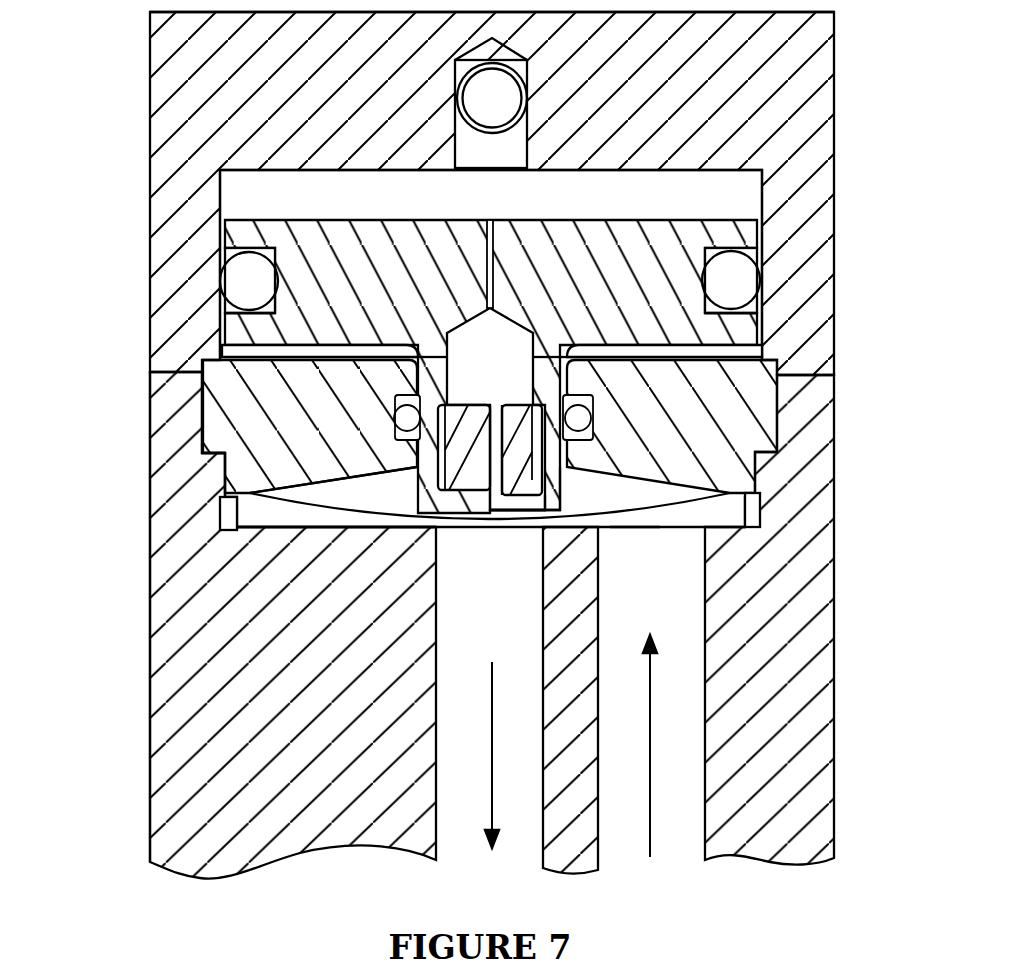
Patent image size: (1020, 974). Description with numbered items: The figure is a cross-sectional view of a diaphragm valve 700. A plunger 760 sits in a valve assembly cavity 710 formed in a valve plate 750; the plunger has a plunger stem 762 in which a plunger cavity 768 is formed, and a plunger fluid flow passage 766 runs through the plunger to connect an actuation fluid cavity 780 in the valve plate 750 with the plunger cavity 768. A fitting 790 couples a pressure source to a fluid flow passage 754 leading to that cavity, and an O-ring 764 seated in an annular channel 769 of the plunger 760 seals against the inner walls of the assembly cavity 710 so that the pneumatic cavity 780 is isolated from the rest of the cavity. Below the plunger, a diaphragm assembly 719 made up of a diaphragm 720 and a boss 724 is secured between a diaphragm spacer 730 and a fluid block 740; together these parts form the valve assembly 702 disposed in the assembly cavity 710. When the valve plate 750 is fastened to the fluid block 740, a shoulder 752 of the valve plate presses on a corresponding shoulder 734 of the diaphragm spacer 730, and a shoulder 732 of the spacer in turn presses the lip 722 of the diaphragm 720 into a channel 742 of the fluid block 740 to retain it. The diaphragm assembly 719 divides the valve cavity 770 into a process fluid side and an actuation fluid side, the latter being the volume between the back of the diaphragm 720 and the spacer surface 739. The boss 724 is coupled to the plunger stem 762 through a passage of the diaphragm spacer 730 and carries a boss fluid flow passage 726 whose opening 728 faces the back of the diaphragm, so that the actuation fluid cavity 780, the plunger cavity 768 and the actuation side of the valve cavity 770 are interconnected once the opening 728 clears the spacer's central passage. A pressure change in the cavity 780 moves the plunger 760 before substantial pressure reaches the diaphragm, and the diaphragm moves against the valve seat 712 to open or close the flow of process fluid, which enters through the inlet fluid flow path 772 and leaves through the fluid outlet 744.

The valve 700 is at (320, 600).
The valve assembly 702 is at (265, 305).
The valve assembly cavity 710 is at (205, 455).
The valve seat 712 is at (320, 565).
The diaphragm assembly 719 is at (626, 523).
The diaphragm 720 is at (437, 485).
The lip 722 is at (232, 515).
The boss 724 is at (462, 482).
The boss fluid flow passage 726 is at (495, 405).
The opening 728 is at (560, 505).
The diaphragm spacer 730 is at (735, 405).
The shoulder 732 is at (240, 490).
The shoulder 734 is at (262, 358).
The surface 739 is at (402, 467).
The fluid block 740 is at (755, 738).
The channel 742 is at (240, 537).
The fluid outlet 744 is at (472, 755).
The valve plate 750 is at (795, 262).
The shoulder 752 is at (215, 352).
The fluid flow passage 754 is at (488, 92).
The plunger 760 is at (665, 335).
The plunger stem 762 is at (570, 450).
The O-ring 764 is at (245, 268).
The plunger fluid flow passage 766 is at (493, 262).
The plunger cavity 768 is at (580, 440).
The annular channel 769 is at (235, 333).
The valve cavity 770 is at (640, 513).
The inlet fluid flow path 772 is at (669, 746).
The actuation fluid cavity 780 is at (255, 190).
The fitting 790 is at (527, 130).